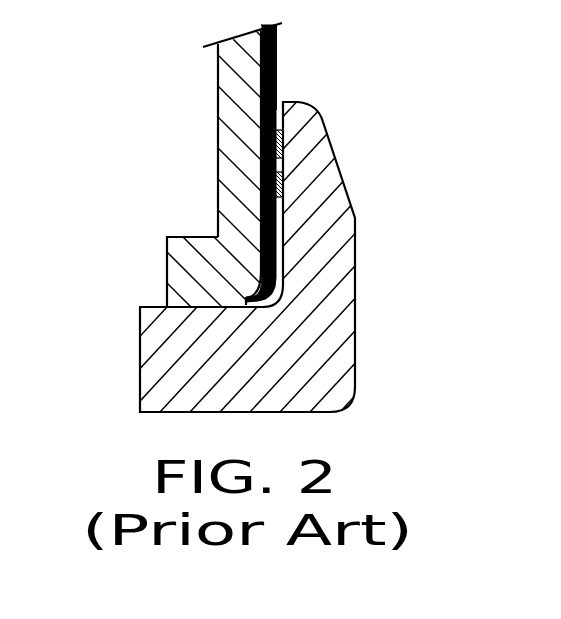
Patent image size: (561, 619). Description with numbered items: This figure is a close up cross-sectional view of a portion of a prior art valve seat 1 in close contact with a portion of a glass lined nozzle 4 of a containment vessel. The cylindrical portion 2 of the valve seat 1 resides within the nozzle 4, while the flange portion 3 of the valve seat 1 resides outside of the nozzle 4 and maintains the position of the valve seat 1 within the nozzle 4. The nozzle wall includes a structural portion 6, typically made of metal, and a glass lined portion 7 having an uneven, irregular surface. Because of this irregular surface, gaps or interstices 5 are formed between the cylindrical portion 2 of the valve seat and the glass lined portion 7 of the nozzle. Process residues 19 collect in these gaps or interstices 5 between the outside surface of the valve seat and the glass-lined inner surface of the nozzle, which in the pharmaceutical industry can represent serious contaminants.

The valve seat 1 is at (280, 253).
The cylindrical portion 2 is at (280, 253).
The flange portion 3 is at (280, 253).
The glass lined nozzle 4 is at (187, 195).
The gaps or interstices 5 is at (299, 163).
The structural portion 6 is at (184, 195).
The glass lined portion 7 is at (324, 57).
The process residues 19 is at (352, 150).